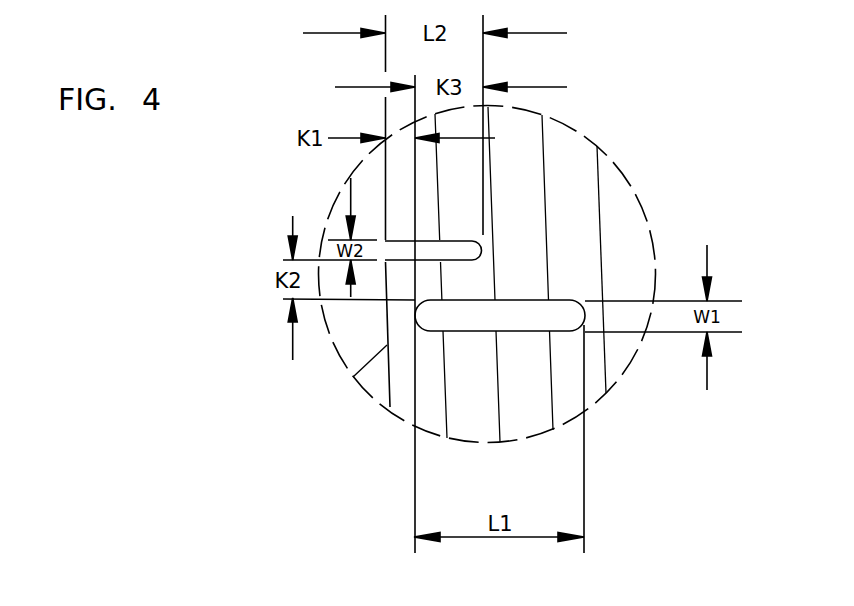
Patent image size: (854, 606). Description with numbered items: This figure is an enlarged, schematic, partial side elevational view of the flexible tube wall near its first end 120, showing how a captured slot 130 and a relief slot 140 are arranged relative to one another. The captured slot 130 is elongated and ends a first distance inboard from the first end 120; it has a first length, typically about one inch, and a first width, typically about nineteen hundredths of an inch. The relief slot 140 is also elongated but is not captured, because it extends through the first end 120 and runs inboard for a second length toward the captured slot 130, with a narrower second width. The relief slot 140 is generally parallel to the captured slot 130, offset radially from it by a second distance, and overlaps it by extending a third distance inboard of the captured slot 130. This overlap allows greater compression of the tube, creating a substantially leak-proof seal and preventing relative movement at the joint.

The first end 120 is at (387, 298).
The captured slot 130 is at (555, 308).
The relief slot 140 is at (474, 250).